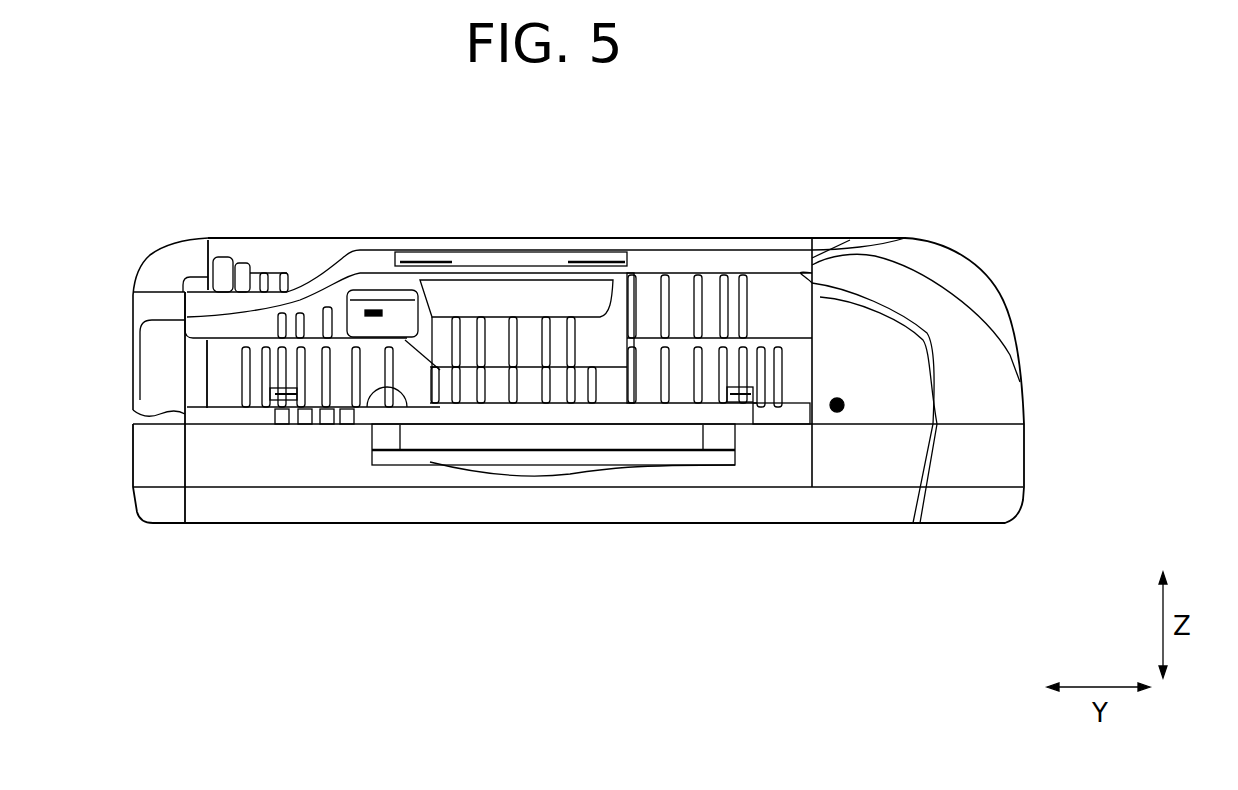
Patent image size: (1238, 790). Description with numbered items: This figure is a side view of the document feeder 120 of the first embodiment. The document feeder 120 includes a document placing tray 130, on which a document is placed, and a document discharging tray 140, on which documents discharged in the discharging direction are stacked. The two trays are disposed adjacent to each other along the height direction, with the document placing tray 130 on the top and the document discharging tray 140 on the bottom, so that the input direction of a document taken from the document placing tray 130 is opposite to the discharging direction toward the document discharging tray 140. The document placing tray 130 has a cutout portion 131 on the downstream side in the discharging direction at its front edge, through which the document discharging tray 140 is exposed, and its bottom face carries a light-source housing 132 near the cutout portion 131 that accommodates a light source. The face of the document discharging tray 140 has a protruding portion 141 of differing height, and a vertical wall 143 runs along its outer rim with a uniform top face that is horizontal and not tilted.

The document feeder 120 is at (837, 218).
The document placing tray 130 is at (670, 262).
The cutout portion 131 is at (310, 236).
The light-source housing 132 is at (383, 303).
The document discharging tray 140 is at (437, 367).
The protruding portion 141 is at (628, 270).
The vertical wall 143 is at (157, 452).